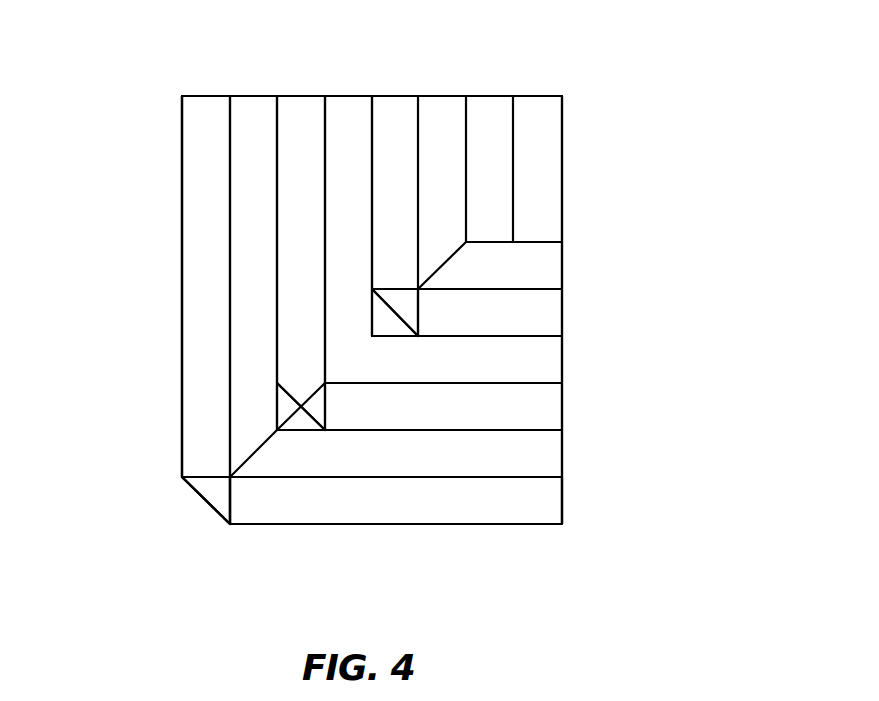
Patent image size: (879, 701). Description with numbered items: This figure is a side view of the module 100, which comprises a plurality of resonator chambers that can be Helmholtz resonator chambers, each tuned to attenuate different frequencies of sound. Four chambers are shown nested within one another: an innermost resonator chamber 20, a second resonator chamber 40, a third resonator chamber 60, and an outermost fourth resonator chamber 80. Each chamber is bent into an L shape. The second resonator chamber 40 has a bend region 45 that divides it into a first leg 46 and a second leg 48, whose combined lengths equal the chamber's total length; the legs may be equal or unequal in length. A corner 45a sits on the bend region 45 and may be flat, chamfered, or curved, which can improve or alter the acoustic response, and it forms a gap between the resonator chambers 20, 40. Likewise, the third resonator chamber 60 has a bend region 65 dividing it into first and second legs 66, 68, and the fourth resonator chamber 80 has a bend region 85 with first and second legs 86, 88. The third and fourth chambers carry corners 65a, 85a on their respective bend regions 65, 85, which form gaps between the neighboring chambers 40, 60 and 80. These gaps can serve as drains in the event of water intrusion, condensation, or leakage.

The module 100 is at (98, 80).
The fourth resonator chamber 80 is at (230, 84).
The first leg 86 is at (165, 97).
The first leg 66 is at (264, 97).
The third resonator chamber 60 is at (325, 84).
The first leg 46 is at (362, 97).
The second resonator chamber 40 is at (418, 84).
The resonator chamber 20 is at (513, 84).
The bend region 45 is at (413, 312).
The corner 45a is at (393, 322).
The second leg 48 is at (562, 356).
The bend region 65 is at (314, 404).
The corner 65a is at (299, 414).
The second leg 68 is at (562, 449).
The bend region 85 is at (207, 490).
The corner 85a is at (220, 527).
The second leg 88 is at (562, 543).